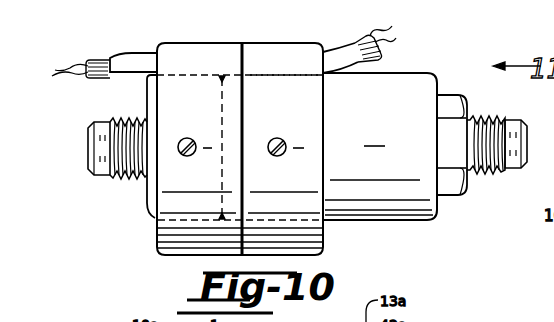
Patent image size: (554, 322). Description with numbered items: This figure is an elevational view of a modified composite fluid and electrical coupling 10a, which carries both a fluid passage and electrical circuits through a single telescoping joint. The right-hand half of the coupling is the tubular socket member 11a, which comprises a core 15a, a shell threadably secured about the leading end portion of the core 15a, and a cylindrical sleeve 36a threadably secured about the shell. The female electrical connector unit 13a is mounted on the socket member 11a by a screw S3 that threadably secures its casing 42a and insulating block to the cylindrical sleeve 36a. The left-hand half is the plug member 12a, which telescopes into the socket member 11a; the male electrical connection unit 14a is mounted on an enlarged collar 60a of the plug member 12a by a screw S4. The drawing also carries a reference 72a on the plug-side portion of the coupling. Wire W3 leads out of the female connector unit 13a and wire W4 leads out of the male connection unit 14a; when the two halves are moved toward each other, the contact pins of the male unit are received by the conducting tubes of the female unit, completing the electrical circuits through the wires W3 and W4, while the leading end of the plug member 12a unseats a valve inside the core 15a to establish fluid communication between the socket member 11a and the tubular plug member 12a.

The composite coupling 10a is at (137, 39).
The tubular socket member 11a is at (478, 170).
The plug member 12a is at (110, 176).
The female electrical connector unit 13a is at (304, 42).
The male electrical connection unit 14a is at (170, 43).
The core 15a is at (464, 107).
The cylindrical sleeve 36a is at (396, 73).
The casing 42a is at (294, 47).
The enlarged collar 60a is at (145, 205).
The cap section 72a is at (220, 47).
The screw S3 is at (276, 156).
The screw S4 is at (186, 156).
The wire W3 is at (367, 44).
The wire W4 is at (97, 70).